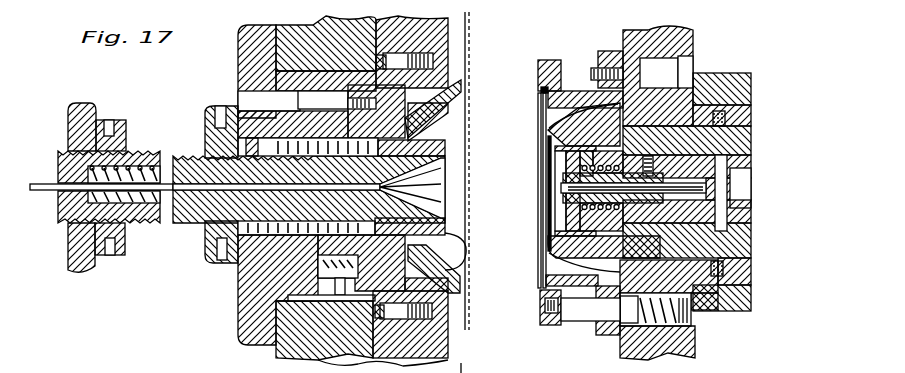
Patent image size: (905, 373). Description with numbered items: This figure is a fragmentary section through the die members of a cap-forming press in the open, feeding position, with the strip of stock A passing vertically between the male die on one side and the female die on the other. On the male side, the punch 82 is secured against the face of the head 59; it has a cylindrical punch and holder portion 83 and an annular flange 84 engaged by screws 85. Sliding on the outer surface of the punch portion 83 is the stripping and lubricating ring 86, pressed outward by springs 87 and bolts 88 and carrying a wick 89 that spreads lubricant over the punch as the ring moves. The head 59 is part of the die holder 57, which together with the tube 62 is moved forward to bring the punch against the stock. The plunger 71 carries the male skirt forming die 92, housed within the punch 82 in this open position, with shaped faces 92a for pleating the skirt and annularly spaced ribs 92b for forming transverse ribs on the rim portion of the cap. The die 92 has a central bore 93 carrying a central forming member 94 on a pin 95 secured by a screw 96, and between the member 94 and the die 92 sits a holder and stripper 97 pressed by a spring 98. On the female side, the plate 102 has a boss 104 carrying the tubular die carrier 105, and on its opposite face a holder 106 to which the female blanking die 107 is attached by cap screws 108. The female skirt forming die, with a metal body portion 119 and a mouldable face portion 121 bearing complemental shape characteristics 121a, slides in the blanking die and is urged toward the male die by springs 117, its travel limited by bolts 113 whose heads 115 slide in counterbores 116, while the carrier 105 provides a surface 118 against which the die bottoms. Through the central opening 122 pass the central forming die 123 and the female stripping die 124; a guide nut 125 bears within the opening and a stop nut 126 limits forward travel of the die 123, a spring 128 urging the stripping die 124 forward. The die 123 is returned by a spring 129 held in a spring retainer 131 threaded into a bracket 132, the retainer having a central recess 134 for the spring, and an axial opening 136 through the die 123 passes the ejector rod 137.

The stock A is at (463, 22).
The die holder 57 is at (730, 69).
The head 59 is at (683, 26).
The tube 62 is at (743, 104).
The plunger 71 is at (745, 131).
The punch 82 is at (582, 83).
The punch and holder portion 83 is at (532, 99).
The annular flange 84 is at (600, 43).
The screws 85 is at (680, 59).
The stripping and lubricating ring 86 is at (541, 52).
The springs 87 is at (653, 346).
The bolts 88 is at (576, 305).
The wick 89 is at (533, 79).
The male skirt forming die 92 is at (546, 126).
The shaped faces 92a is at (572, 98).
The annularly spaced ribs 92b is at (540, 152).
The central bore 93 is at (725, 171).
The central forming member 94 is at (547, 171).
The pin 95 is at (700, 201).
The screw 96 is at (720, 149).
The holder and stripper 97 is at (543, 222).
The spring 98 is at (572, 190).
The plate 102 is at (350, 360).
The boss 104 is at (285, 345).
The die carrier 105 is at (240, 36).
The holder 106 is at (430, 339).
The female blanking die 107 is at (432, 311).
The cap screws 108 is at (426, 301).
The bolts 113 is at (351, 111).
The heads 115 is at (286, 86).
The counterbores 116 is at (242, 100).
The springs 117 is at (327, 290).
The surface 118 is at (240, 300).
The body portion 119 is at (450, 80).
The face portion 121 is at (420, 113).
The complemental shape characteristics 121a is at (447, 264).
The central opening 122 is at (290, 265).
The central forming die 123 is at (430, 214).
The female stripping die 124 is at (445, 237).
The guide nut 125 is at (232, 256).
The stop nut 126 is at (197, 234).
The spring 128 is at (197, 135).
The spring 129 is at (165, 158).
The spring retainer 131 is at (52, 210).
The bracket 132 is at (62, 117).
The central recess 134 is at (120, 160).
The axial opening 136 is at (97, 112).
The rod 137 is at (30, 190).